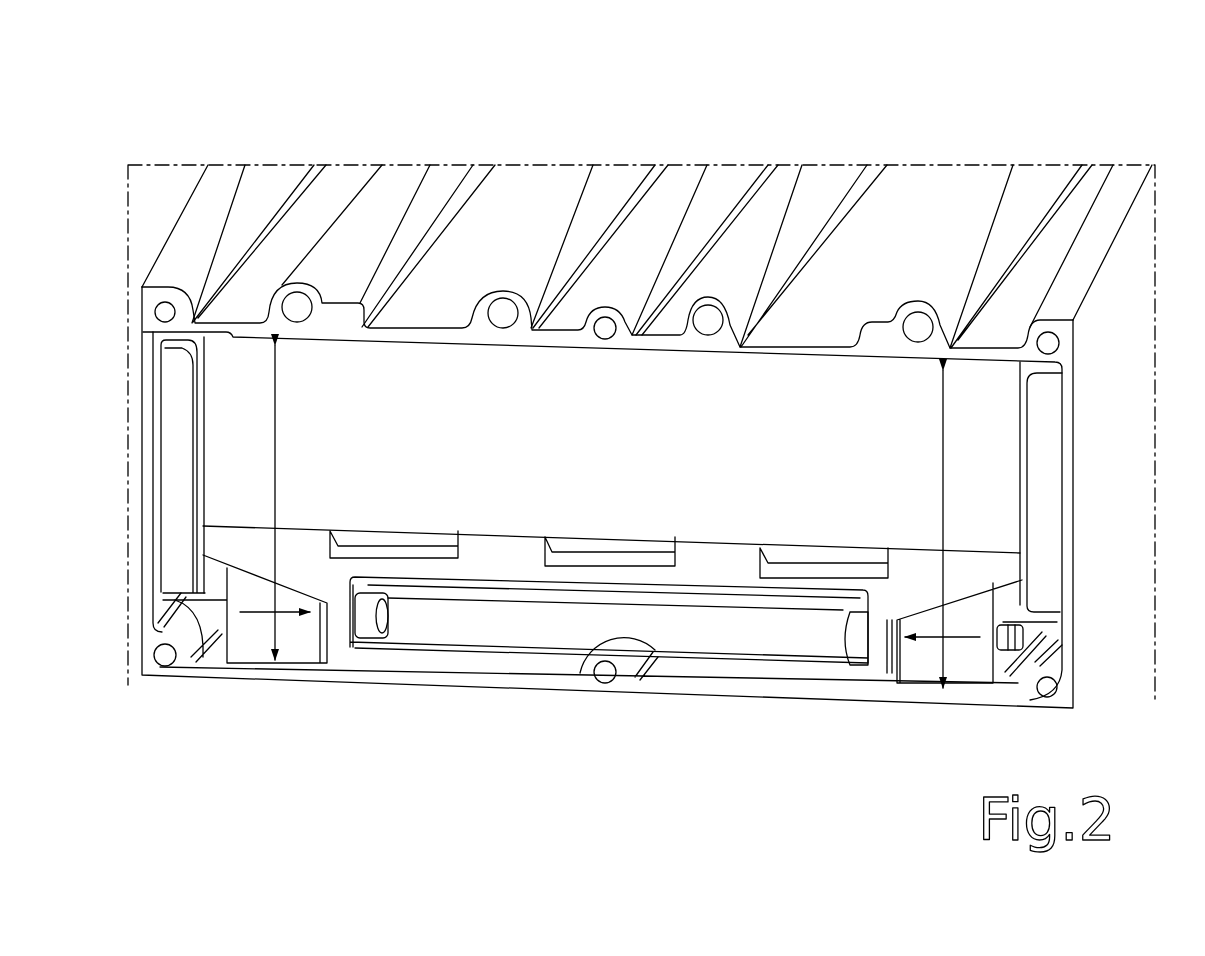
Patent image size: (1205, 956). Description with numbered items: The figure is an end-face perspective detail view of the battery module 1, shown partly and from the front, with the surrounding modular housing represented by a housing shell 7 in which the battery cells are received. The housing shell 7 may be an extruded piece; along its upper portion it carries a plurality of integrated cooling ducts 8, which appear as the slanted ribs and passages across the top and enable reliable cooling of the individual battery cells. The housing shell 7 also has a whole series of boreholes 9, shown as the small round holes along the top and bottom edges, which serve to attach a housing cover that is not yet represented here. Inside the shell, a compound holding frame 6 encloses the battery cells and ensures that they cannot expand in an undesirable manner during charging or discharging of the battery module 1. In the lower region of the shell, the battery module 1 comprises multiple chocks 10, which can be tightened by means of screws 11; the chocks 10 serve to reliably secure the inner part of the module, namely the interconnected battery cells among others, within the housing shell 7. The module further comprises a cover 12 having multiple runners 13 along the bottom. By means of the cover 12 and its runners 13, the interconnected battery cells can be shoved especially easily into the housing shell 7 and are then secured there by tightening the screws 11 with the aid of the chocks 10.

The battery module 1 is at (298, 138).
The holding frame 6 is at (608, 471).
The housing shell 7 is at (172, 182).
The cooling ducts 8 is at (703, 298).
The boreholes 9 is at (153, 318).
The chocks 10 is at (250, 648).
The screws 11 is at (375, 637).
The cover 12 is at (540, 640).
The runners 13 is at (488, 648).